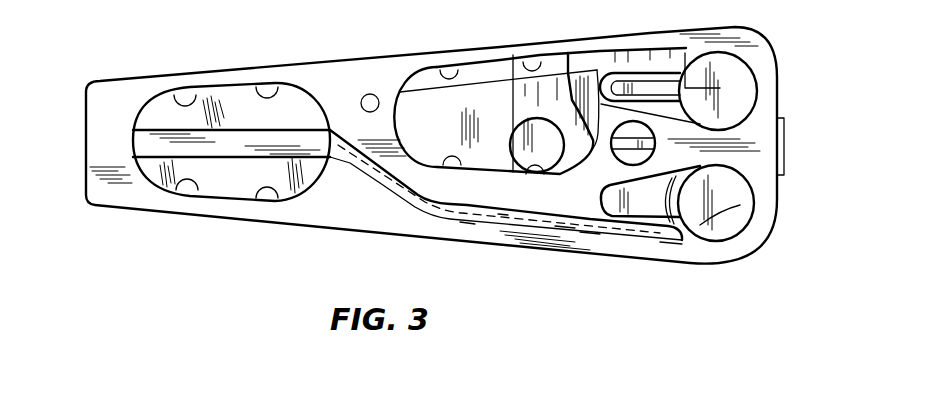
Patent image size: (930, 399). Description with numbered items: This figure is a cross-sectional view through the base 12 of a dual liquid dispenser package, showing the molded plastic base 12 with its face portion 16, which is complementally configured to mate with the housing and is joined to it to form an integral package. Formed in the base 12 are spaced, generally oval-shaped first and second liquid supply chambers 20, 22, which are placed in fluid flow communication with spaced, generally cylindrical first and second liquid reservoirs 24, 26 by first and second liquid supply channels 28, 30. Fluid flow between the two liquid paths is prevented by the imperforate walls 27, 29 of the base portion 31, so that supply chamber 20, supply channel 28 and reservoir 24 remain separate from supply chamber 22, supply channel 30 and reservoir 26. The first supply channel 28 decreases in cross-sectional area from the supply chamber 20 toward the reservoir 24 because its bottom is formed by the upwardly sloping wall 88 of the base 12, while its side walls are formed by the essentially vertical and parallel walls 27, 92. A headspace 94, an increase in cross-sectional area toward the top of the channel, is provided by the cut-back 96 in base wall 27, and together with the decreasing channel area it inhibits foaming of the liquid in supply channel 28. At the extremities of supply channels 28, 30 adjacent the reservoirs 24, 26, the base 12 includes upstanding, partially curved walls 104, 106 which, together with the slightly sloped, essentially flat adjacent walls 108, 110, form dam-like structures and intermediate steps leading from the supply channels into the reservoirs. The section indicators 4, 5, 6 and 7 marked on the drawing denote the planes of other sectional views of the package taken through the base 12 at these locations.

The base 12 is at (240, 221).
The face portion 16 is at (320, 78).
The first liquid supply chamber 20 is at (208, 100).
The second liquid supply chamber 22 is at (427, 107).
The first liquid reservoir 24 is at (740, 202).
The second liquid reservoir 26 is at (733, 72).
The imperforate wall 27 is at (373, 187).
The first liquid supply channel 28 is at (587, 232).
The imperforate wall 29 is at (568, 60).
The second liquid supply channel 30 is at (604, 72).
The base portion 31 is at (482, 183).
The wall 88 is at (487, 215).
The wall 92 is at (560, 230).
The headspace 94 is at (467, 200).
The cut-back 96 is at (503, 217).
The upstanding partially curved wall 104 is at (680, 247).
The upstanding partially curved wall 106 is at (663, 76).
The sloped flat wall 108 is at (662, 203).
The sloped flat wall 110 is at (640, 92).
The section line 4- 4 is at (73, 138).
The section line 5- 5 is at (486, 272).
The section line 6- 6 is at (713, 290).
The section line 7- 7 is at (397, 85).